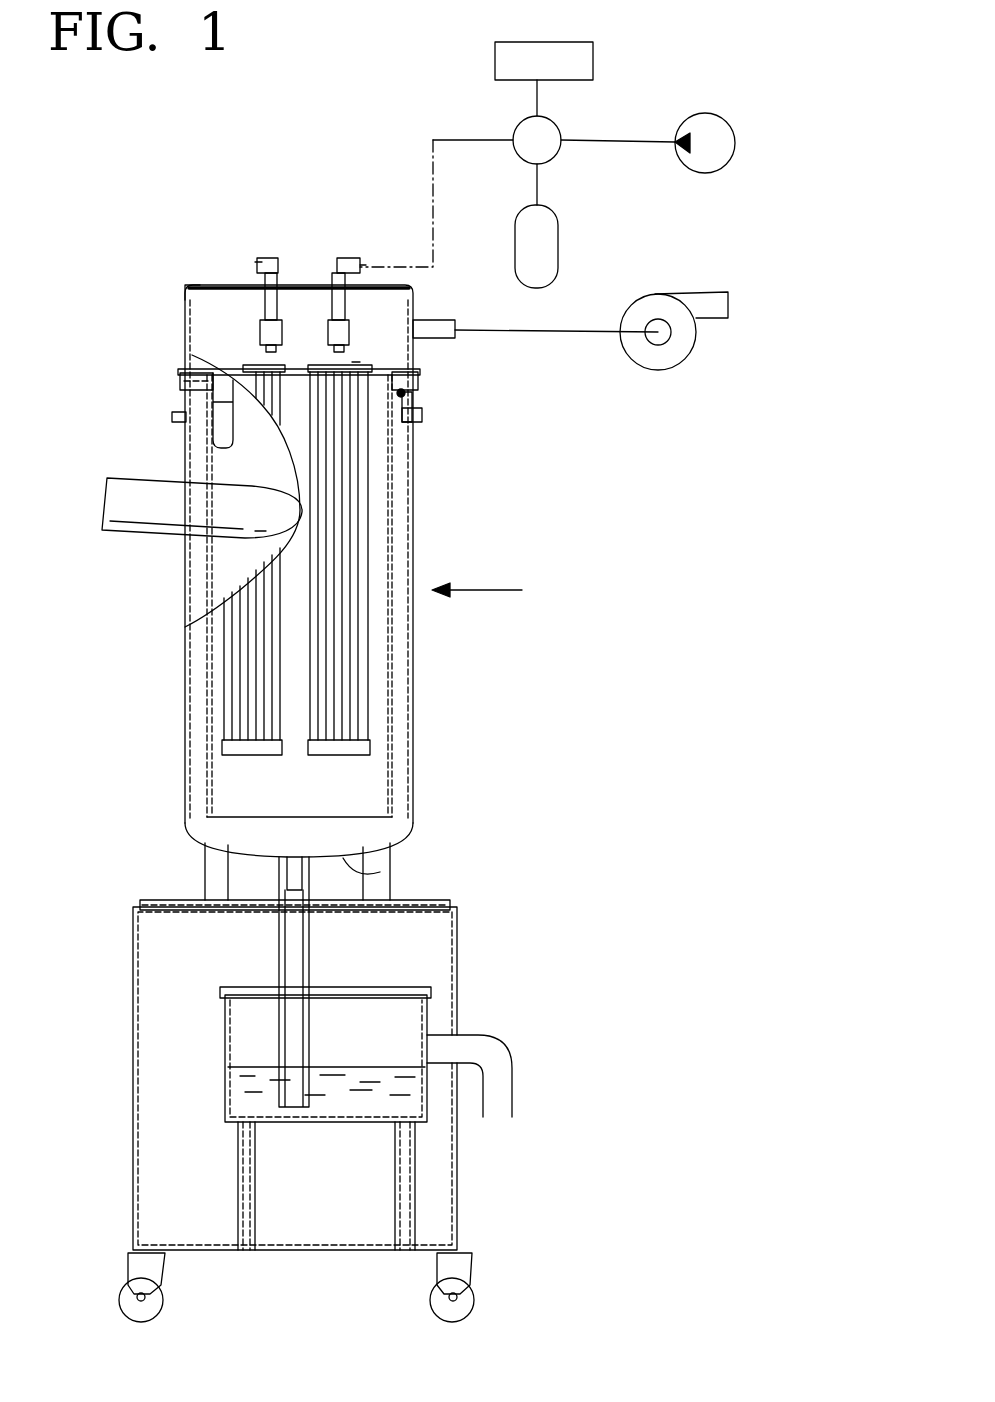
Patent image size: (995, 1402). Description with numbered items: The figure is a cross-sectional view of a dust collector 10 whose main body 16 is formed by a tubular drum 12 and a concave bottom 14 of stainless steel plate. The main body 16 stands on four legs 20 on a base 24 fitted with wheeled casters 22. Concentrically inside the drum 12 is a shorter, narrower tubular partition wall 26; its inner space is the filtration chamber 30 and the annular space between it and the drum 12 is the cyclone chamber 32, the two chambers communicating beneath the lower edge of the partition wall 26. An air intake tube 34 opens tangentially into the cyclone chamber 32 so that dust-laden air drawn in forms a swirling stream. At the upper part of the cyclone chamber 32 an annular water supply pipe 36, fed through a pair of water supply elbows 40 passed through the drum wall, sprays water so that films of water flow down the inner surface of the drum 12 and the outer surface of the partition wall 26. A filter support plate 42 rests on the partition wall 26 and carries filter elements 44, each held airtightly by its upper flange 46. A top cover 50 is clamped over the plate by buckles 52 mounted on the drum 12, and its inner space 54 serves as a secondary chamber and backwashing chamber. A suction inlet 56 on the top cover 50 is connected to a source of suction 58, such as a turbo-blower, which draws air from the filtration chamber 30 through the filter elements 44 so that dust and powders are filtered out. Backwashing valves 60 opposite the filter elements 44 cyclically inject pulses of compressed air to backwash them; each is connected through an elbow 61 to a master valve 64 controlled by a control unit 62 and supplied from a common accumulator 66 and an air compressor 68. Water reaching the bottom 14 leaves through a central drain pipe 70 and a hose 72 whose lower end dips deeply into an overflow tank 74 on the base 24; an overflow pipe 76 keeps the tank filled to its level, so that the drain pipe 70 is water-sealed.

The dust collector 10 is at (106, 168).
The drum 12 is at (358, 571).
The concave bottom 14 is at (429, 858).
The main body 16 is at (500, 588).
The legs 20 is at (238, 869).
The wheeled casters 22 is at (348, 1282).
The base 24 is at (342, 1075).
The tubular partition wall 26 is at (367, 596).
The filtration chamber 30 is at (309, 790).
The cyclone chamber 32 is at (200, 536).
The air intake tube 34 is at (199, 543).
The annular water supply pipe 36 is at (466, 401).
The water supply elbows 40 is at (321, 414).
The filter support plate 42 is at (338, 320).
The filter element 44 is at (381, 560).
The upper flange 46 is at (381, 281).
The top cover 50 is at (152, 289).
The buckles 52 is at (168, 422).
The inner space 54 is at (236, 333).
The suction inlet 56 is at (535, 353).
The source of suction 58 is at (674, 368).
The backwashing valves 60 is at (271, 284).
The elbow 61 is at (310, 204).
The control unit 62 is at (586, 77).
The master valve 64 is at (517, 191).
The accumulator 66 is at (578, 246).
The air compressor 68 is at (732, 170).
The drain pipe 70 is at (199, 841).
The hose 72 is at (339, 982).
The overflow tank 74 is at (240, 1118).
The overflow pipe 76 is at (520, 1076).